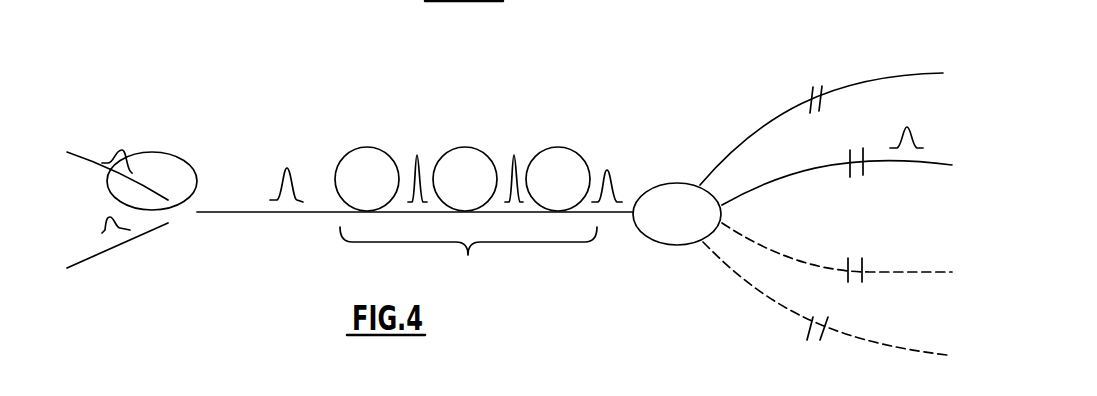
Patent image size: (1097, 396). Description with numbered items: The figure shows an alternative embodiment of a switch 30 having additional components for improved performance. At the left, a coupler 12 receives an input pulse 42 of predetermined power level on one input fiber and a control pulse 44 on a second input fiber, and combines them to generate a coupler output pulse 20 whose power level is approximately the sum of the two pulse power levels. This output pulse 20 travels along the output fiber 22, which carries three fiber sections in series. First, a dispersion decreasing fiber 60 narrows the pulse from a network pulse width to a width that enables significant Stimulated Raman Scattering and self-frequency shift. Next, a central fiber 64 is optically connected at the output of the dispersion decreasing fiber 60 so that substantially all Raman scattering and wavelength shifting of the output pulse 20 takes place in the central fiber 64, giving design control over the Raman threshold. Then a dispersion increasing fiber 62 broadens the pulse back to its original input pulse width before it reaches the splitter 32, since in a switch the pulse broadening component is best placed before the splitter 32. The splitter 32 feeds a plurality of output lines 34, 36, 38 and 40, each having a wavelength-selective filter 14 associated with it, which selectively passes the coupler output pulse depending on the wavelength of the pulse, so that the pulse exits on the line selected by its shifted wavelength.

The switch 30 is at (170, 83).
The input pulse 42 is at (142, 144).
The control pulse 44 is at (124, 246).
The coupler 12 is at (247, 233).
The coupler output pulse 20 is at (290, 151).
The output fiber 22 is at (468, 258).
The dispersion decreasing fiber 60 is at (370, 144).
The central fiber 64 is at (468, 144).
The dispersion increasing fiber 62 is at (561, 144).
The splitter 32 is at (662, 245).
The output line 34 is at (925, 73).
The output line 36 is at (920, 163).
The output line 38 is at (930, 270).
The output line 40 is at (913, 353).
The wavelength-selective filter 14 is at (802, 100).